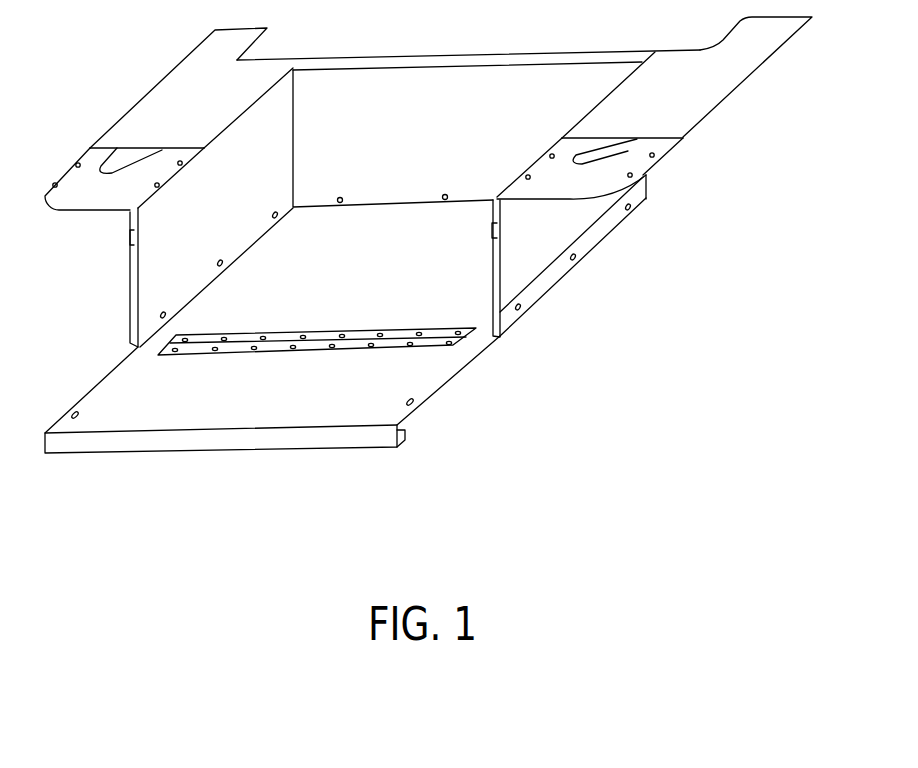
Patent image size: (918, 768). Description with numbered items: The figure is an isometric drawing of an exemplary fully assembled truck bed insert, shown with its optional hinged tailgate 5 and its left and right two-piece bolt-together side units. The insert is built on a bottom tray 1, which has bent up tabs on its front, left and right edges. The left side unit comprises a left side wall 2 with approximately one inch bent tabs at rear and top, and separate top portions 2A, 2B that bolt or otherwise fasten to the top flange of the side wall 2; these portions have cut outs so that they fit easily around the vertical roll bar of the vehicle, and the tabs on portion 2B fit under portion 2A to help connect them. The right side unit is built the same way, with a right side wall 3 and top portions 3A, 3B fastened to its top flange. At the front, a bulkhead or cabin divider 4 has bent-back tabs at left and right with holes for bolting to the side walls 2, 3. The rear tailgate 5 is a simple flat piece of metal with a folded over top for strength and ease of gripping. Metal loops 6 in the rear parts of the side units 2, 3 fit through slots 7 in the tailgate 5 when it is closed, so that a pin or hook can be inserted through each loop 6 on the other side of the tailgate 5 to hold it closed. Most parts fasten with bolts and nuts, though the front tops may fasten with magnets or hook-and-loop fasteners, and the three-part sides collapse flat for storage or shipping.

The bottom tray 1 is at (425, 226).
The left side wall 2 is at (126, 295).
The left top portion 2A is at (110, 200).
The left front top portion 2B is at (209, 107).
The right side wall 3 is at (544, 242).
The right top portion 3A is at (580, 187).
The right front top portion 3B is at (676, 97).
The front bulkhead/cabin divider 4 is at (458, 52).
The rear tailgate 5 is at (456, 384).
The metal loops 6 is at (124, 241).
The slots 7 is at (63, 413).